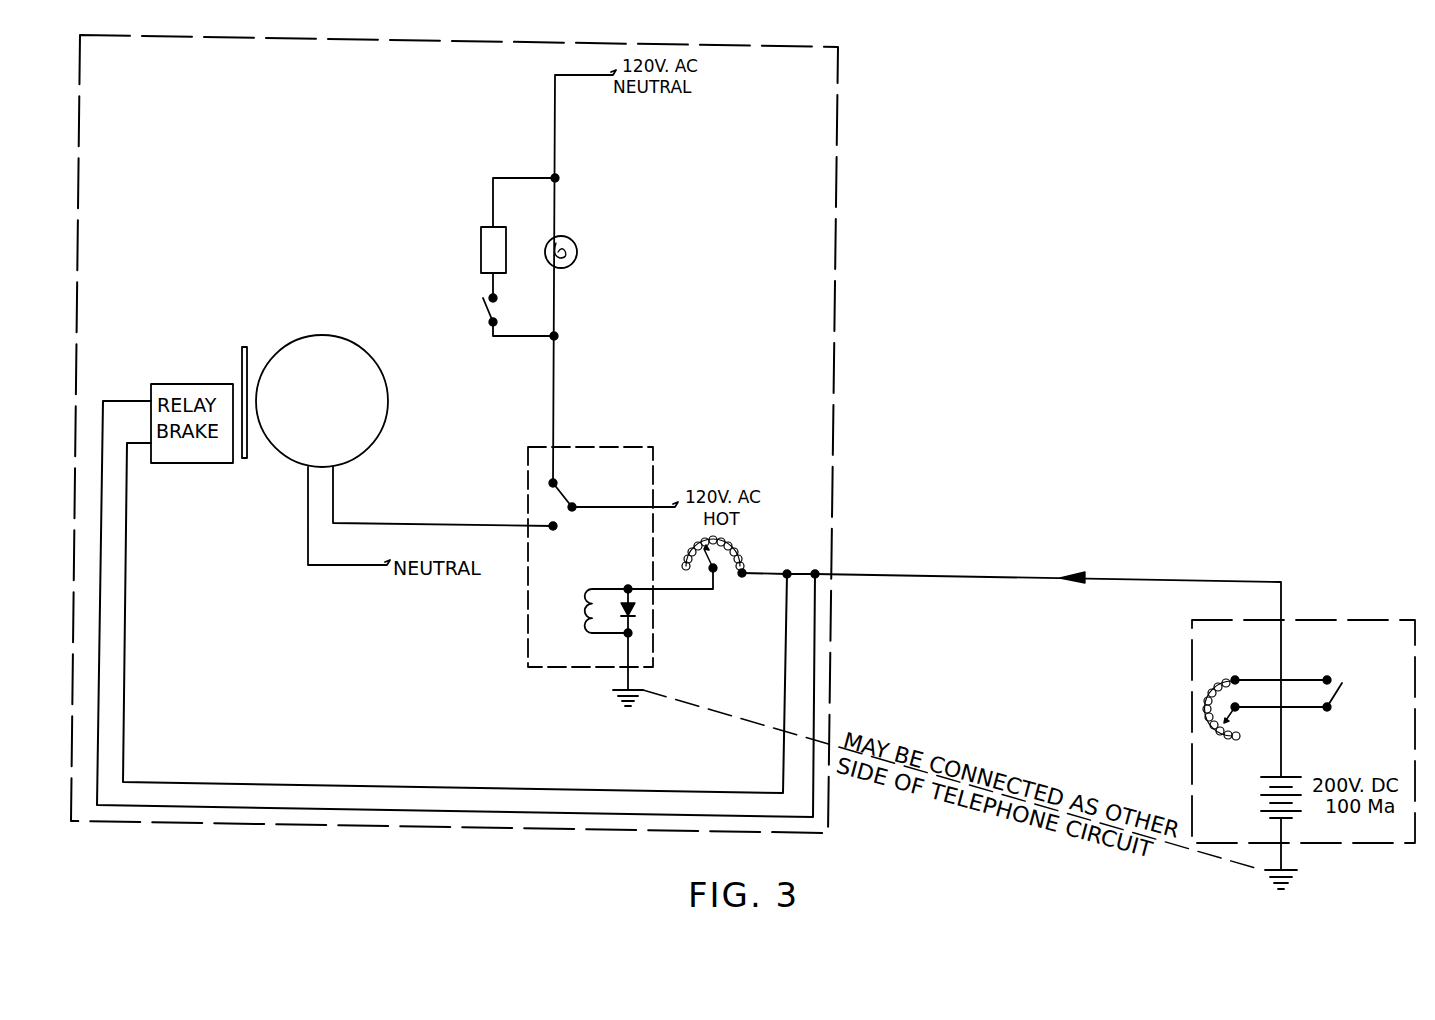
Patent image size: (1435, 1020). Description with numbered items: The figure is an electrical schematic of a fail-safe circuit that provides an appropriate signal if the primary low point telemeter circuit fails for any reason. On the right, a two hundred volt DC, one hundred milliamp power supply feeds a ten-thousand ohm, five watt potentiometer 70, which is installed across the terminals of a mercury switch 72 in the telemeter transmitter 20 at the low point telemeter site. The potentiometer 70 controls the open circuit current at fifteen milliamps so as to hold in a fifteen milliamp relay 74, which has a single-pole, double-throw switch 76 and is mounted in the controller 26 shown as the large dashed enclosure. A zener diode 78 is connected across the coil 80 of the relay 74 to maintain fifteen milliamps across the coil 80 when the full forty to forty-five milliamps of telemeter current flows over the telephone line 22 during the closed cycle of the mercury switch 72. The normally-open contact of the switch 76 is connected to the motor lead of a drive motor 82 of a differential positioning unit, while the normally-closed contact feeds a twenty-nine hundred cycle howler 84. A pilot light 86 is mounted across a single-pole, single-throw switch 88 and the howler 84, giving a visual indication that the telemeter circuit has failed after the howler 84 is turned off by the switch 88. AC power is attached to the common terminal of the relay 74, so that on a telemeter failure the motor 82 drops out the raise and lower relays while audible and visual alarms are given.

The telemeter transmitter 20 is at (1192, 722).
The telephone line with solenoid 22 is at (1010, 578).
The controller 26 is at (838, 290).
The potentiometer 70 is at (1218, 682).
The mercury switch 72 is at (1337, 694).
The relay 74 is at (490, 632).
The single-pole, double-throw switch 76 is at (567, 498).
The zener diode 78 is at (635, 612).
The coil 80 is at (585, 600).
The drive motor 82 is at (332, 412).
The howler 84 is at (481, 249).
The pilot light 86 is at (577, 252).
The single-pole, single-throw switch 88 is at (487, 312).